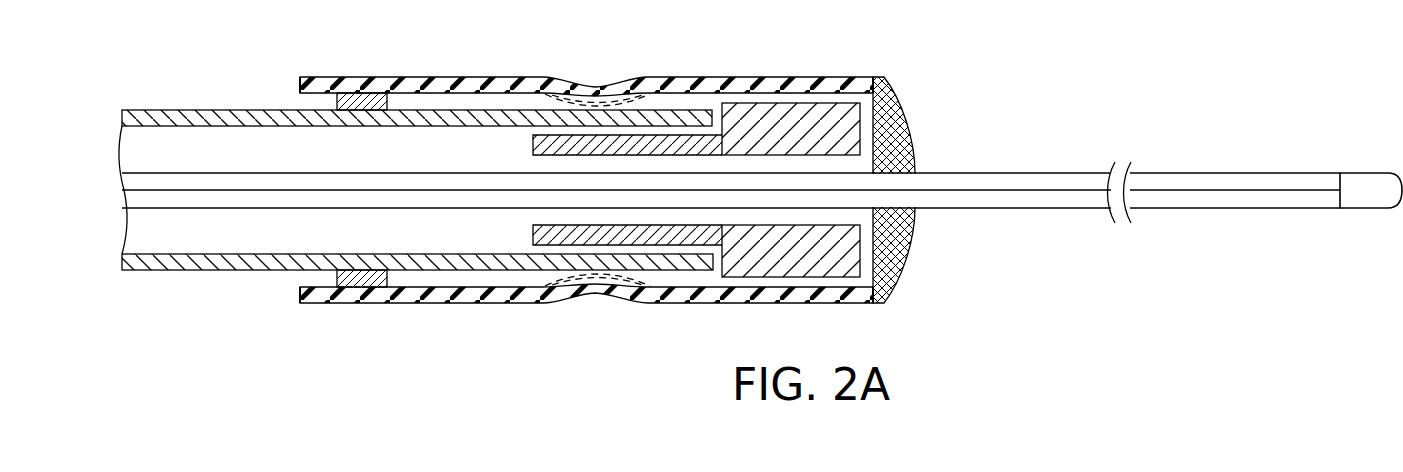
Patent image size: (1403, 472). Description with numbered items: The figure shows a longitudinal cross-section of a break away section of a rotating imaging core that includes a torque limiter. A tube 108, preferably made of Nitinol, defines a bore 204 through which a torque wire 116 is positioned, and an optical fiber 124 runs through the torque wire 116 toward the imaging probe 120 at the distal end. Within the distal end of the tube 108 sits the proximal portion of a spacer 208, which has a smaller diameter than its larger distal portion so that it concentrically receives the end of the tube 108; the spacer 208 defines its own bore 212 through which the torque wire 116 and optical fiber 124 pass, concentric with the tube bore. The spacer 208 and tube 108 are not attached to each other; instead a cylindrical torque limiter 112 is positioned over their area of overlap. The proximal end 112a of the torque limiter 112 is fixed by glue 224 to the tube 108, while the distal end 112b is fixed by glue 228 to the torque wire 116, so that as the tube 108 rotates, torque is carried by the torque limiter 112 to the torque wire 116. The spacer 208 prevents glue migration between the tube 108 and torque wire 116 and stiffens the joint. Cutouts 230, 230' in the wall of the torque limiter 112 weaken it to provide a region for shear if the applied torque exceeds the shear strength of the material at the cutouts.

The tube 108 is at (215, 110).
The bore 204 is at (168, 142).
The torque limiter 112 is at (437, 77).
The proximal end of torque limiter 112a is at (303, 77).
The distal end of torque limiter 112b is at (812, 77).
The glue 224 is at (367, 93).
The cutout 230 is at (597, 65).
The cutout 230' is at (597, 318).
The bore of spacer 212 is at (655, 162).
The spacer 208 is at (760, 128).
The glue 228 is at (905, 107).
The torque wire 116 is at (1010, 172).
The optical fiber 124 is at (1218, 192).
The imaging probe 120 is at (1365, 172).